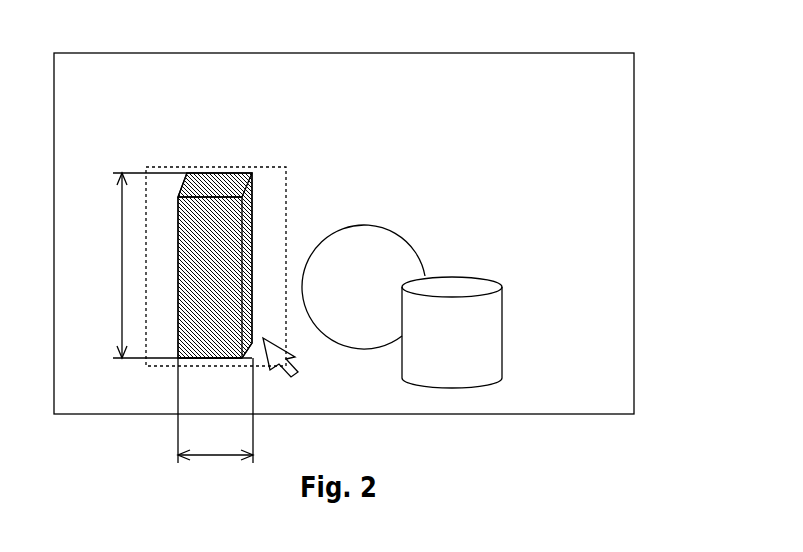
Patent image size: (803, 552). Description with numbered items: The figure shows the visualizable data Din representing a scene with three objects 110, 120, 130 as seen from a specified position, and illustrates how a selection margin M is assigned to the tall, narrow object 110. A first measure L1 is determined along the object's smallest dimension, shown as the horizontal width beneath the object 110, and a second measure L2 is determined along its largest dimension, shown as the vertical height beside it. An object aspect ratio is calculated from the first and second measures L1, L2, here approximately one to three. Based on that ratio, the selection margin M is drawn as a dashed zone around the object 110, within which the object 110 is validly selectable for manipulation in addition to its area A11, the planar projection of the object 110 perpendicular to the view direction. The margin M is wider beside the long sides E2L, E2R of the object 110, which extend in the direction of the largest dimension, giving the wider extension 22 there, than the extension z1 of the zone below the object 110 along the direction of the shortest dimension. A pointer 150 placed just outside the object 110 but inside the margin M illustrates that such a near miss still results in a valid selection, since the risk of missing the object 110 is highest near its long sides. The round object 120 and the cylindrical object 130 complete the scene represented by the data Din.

The visualizable data Din is at (527, 53).
The selection margin M is at (273, 166).
The object 110 is at (183, 183).
The area of the object A11 is at (212, 188).
The left edge of first object E2L is at (176, 250).
The right edge of first object E2R is at (255, 227).
The gap region 22 is at (269, 259).
The second measure L2 is at (165, 265).
The first measure L1 is at (215, 410).
The extension of the zone z1 is at (217, 367).
The cursor 150 is at (292, 370).
The object 120 is at (377, 252).
The object 130 is at (480, 332).